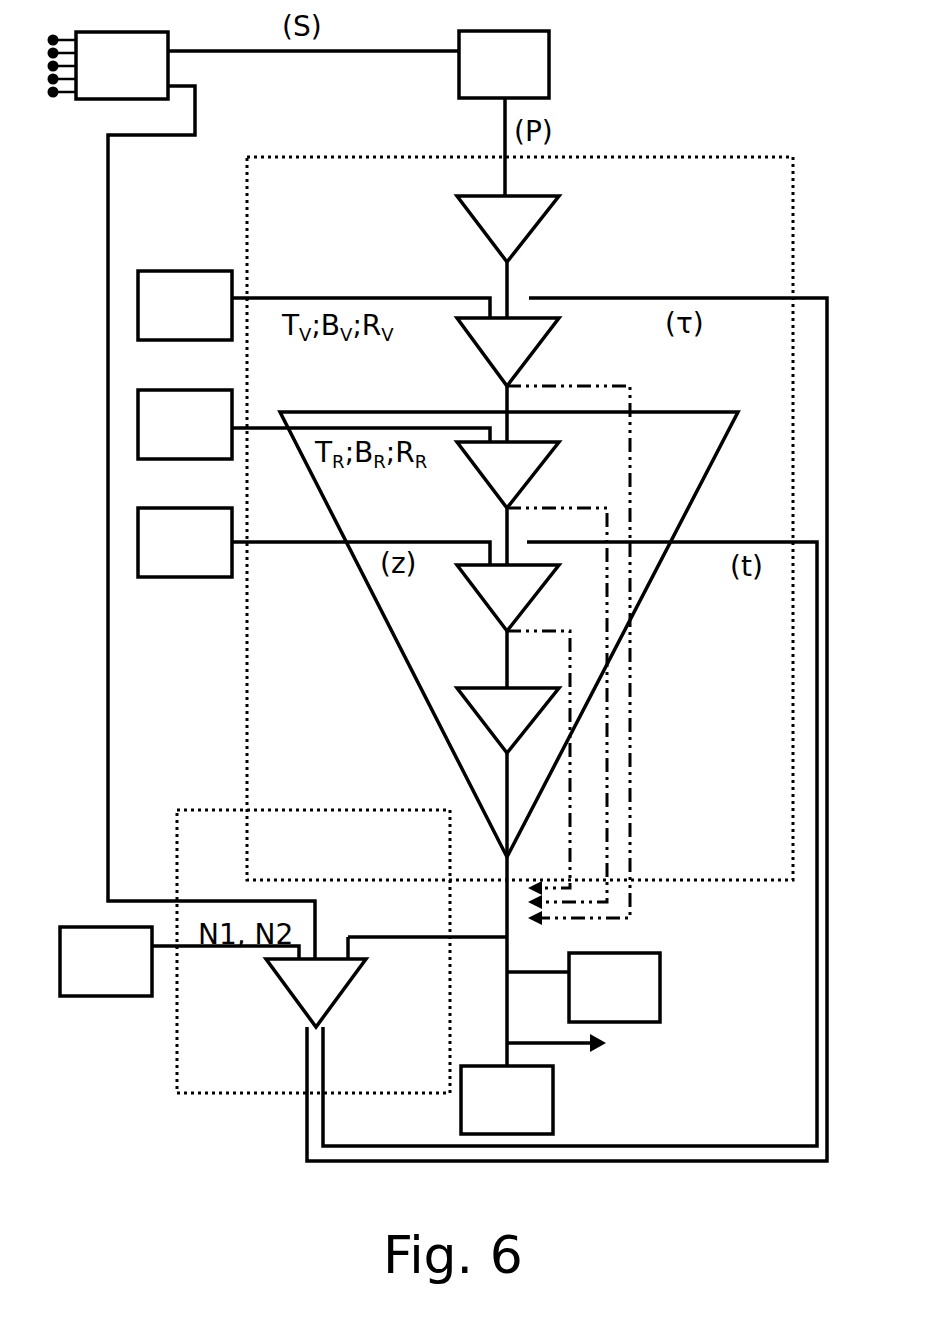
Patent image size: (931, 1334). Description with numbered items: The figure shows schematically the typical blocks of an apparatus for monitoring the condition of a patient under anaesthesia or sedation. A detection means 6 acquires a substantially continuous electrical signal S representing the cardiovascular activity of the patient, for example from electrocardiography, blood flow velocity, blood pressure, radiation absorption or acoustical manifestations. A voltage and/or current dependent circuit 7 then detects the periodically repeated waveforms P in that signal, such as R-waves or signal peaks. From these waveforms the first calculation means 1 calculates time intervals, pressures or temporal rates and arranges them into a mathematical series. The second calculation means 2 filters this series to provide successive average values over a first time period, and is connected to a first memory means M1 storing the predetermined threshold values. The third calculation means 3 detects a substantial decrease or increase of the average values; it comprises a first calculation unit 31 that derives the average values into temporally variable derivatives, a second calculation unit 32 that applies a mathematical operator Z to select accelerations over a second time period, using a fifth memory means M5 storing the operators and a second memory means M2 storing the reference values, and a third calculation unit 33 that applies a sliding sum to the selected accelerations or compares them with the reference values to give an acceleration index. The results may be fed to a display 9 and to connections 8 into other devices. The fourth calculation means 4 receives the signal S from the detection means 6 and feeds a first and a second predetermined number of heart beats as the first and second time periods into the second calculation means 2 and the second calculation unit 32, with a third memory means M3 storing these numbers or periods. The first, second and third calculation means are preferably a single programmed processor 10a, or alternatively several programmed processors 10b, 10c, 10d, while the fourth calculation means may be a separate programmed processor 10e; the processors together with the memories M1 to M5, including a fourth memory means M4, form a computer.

The first calculation means 1 is at (522, 222).
The second calculation means 2 is at (502, 348).
The third calculation means 3 is at (665, 492).
The first calculation unit 31 is at (505, 470).
The second calculation unit 32 is at (505, 592).
The third calculation unit 33 is at (500, 718).
The fourth calculation means 4 is at (330, 978).
The detection means 6 is at (122, 65).
The voltage and/or current dependent circuit 7 is at (504, 64).
The connections 8 is at (568, 1048).
The display 9 is at (507, 1100).
The single programmed processor 10a is at (313, 951).
The programmed processor 10b is at (498, 236).
The programmed processor 10c is at (528, 348).
The programmed processor 10d is at (455, 663).
The separate programmed processor 10e is at (302, 1010).
The first memory means M1 is at (185, 305).
The second memory means M2 is at (185, 424).
The third memory means M3 is at (106, 961).
The fourth memory means M4 is at (614, 987).
The fifth memory means M5 is at (185, 542).